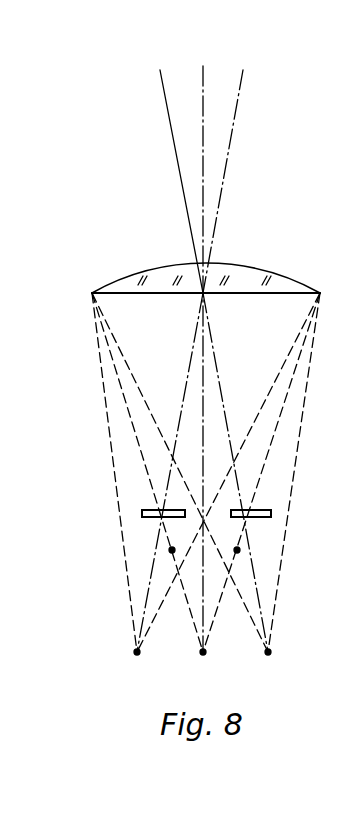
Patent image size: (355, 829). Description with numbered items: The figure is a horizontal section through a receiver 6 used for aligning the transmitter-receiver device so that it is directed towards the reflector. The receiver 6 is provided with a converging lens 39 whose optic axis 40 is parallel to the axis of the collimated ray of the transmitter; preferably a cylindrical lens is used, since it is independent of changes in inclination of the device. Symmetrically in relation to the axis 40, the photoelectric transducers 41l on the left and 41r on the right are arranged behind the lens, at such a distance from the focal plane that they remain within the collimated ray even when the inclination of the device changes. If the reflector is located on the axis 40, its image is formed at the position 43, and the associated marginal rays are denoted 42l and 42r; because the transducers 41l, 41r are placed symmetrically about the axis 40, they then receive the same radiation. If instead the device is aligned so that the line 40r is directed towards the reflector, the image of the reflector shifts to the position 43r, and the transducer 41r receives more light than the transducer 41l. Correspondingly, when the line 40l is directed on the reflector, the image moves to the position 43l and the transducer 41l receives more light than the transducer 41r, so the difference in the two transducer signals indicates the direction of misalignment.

The receiver 6 is at (248, 237).
The converging lens 39 is at (265, 270).
The optic axis 40 is at (210, 348).
The left alignment line 40l is at (204, 348).
The right alignment line 40r is at (207, 348).
The right photoelectric transducer 41r is at (142, 517).
The left photoelectric transducer 41l is at (271, 517).
The right marginal ray 42r is at (172, 550).
The left marginal ray 42l is at (237, 550).
The right image position 43r is at (141, 668).
The image position on axis 43 is at (203, 668).
The left image position 43l is at (275, 668).